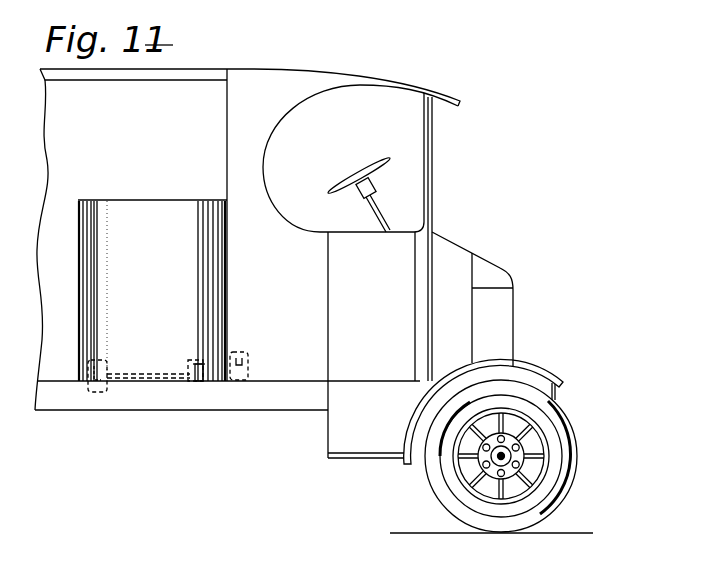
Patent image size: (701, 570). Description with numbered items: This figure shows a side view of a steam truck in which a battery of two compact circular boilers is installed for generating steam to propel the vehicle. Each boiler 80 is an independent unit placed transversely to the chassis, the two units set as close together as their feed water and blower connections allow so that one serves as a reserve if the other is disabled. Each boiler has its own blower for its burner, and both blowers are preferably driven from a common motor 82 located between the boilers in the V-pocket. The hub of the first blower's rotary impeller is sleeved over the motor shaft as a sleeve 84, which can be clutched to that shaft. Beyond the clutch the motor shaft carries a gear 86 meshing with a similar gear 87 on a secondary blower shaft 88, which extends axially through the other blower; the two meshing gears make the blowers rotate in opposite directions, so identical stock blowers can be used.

The boiler 80 is at (128, 243).
The motor 82 is at (250, 362).
The sleeve 84 is at (98, 392).
The gear 86 is at (192, 382).
The gear 87 is at (191, 360).
The secondary blower shaft 88 is at (163, 380).